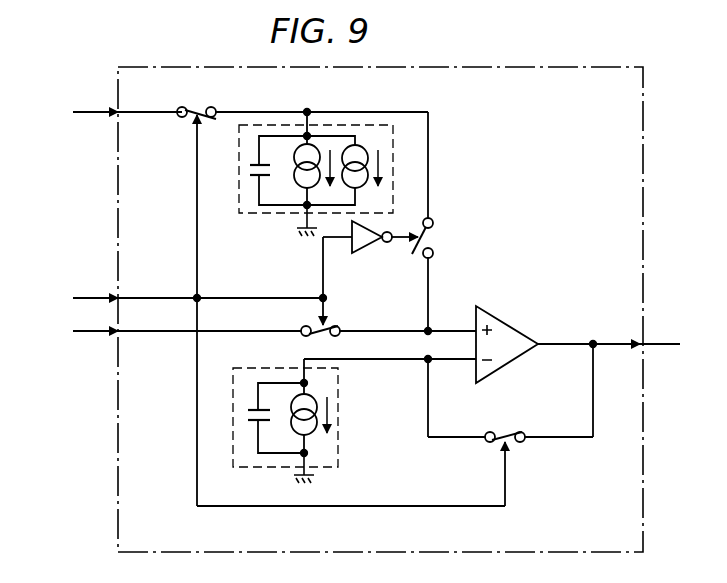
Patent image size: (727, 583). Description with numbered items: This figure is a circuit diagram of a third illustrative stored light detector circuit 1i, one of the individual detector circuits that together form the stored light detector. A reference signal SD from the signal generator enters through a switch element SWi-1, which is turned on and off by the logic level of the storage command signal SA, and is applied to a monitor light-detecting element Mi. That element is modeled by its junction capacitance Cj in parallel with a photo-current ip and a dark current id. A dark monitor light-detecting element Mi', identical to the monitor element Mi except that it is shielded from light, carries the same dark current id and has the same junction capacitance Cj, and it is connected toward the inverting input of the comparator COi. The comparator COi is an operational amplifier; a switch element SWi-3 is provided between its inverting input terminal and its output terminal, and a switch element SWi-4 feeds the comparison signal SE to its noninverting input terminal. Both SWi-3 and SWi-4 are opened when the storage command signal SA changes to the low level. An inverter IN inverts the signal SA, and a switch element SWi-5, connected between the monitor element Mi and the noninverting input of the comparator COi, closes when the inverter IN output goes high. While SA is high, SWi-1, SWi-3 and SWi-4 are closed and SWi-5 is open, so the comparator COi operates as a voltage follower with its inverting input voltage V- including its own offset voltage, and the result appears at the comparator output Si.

The stored light detector circuit 1i is at (545, 67).
The reference signal SD is at (95, 122).
The storage command signal SA is at (181, 298).
The comparison signal SE is at (153, 342).
The switch element SWi-1 is at (197, 110).
The switch element SWi-3 is at (505, 434).
The switch element SWi-4 is at (322, 333).
The switch element SWi-5 is at (421, 232).
The junction capacitance Cj is at (240, 172).
The dark current id is at (330, 160).
The photo-current ip is at (378, 160).
The monitor light-detecting element Mi is at (350, 180).
The dark monitor light-detecting element Mi' is at (307, 425).
The inverter IN is at (364, 240).
The comparator COi is at (505, 330).
The inverting input voltage V- is at (394, 397).
The output signal Si is at (637, 333).